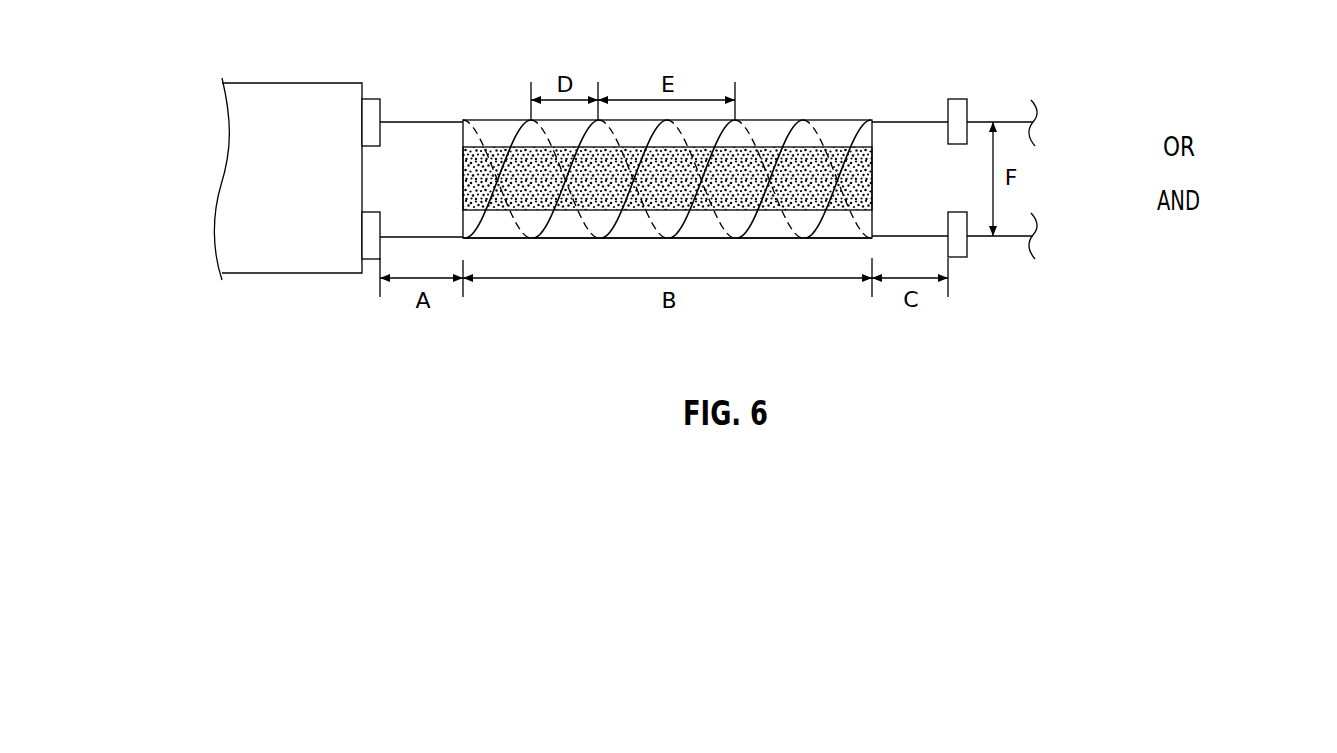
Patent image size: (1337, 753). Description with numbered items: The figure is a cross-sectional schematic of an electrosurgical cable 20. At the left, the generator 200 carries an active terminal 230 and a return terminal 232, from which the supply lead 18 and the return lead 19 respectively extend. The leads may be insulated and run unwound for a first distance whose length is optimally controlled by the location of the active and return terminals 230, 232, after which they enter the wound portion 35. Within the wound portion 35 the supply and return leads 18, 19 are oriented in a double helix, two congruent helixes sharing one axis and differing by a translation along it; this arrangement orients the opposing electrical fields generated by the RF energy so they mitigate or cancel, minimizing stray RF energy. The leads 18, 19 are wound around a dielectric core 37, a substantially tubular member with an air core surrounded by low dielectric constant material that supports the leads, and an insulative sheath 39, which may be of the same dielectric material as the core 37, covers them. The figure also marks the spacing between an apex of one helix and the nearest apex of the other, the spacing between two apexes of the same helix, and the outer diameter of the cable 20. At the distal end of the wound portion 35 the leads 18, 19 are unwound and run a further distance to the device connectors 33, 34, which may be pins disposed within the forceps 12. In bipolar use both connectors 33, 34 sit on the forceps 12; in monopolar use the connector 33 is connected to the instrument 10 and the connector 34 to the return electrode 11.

The generator 200 is at (287, 83).
The active terminal 230 is at (372, 99).
The return terminal 232 is at (373, 259).
The supply lead 18 is at (445, 122).
The return lead 19 is at (445, 237).
The cable 20 is at (861, 108).
The wound portion 35 is at (772, 129).
The dielectric core 37 is at (872, 172).
The insulative sheath 39 is at (763, 238).
The device connector 33 is at (957, 99).
The device connector 34 is at (962, 258).
The forceps 12 is at (1178, 120).
The instrument 10 is at (1179, 173).
The return electrode 11 is at (1179, 227).